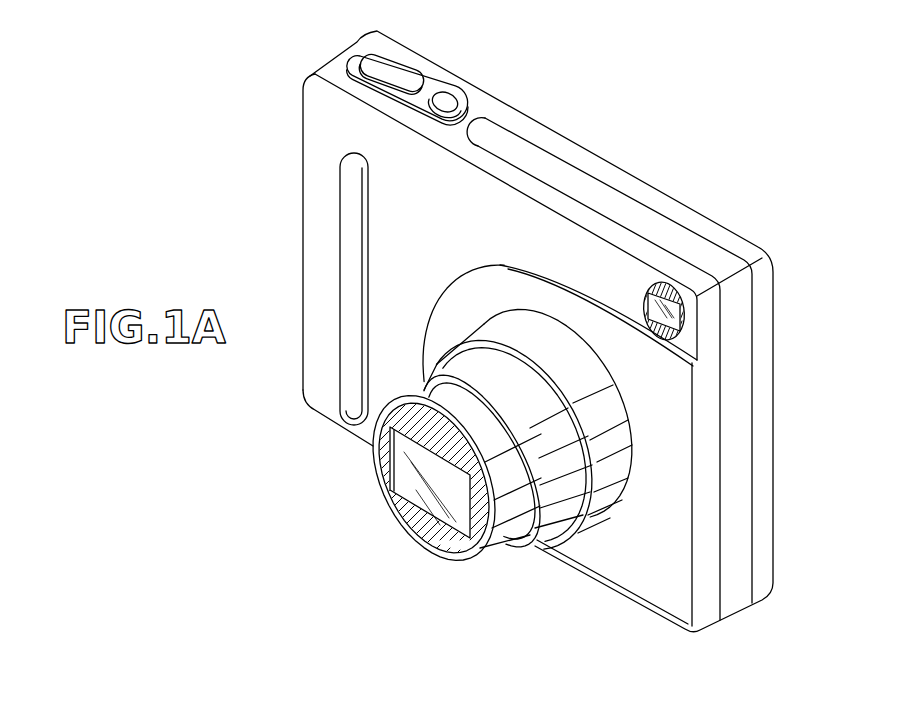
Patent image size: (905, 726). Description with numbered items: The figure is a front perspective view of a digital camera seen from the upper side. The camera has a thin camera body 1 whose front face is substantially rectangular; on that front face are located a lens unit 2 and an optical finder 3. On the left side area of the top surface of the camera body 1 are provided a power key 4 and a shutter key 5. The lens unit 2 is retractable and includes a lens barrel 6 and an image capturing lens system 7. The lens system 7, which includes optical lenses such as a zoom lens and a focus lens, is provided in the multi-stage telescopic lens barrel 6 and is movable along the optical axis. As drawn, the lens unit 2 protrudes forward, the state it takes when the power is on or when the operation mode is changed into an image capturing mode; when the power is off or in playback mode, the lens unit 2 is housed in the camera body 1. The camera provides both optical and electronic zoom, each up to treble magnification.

The camera body 1 is at (768, 457).
The lens unit 2 is at (358, 479).
The optical finder 3 is at (643, 297).
The power key 4 is at (447, 96).
The shutter key 5 is at (390, 72).
The lens barrel 6 is at (390, 508).
The image capturing lens system 7 is at (414, 530).